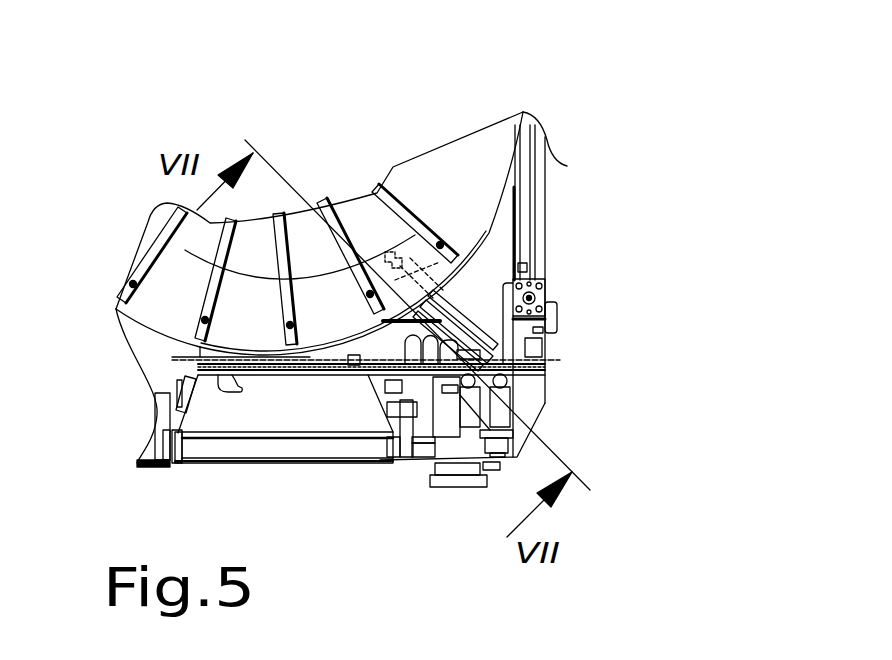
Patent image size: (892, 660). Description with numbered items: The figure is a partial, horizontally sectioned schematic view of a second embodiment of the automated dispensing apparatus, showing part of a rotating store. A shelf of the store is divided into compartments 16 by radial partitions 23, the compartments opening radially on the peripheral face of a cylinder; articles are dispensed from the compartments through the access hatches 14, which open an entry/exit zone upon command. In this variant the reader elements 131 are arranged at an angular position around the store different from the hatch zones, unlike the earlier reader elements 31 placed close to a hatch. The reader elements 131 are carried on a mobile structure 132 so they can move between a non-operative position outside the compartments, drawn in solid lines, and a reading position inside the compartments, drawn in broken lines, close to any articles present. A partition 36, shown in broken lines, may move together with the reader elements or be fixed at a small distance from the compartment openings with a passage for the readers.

The access hatch 14 is at (270, 375).
The compartment 16 is at (363, 217).
The radial partition 23 is at (193, 255).
The reader element 31 is at (195, 363).
The partition 36 is at (383, 292).
The reader element 131 is at (458, 268).
The mobile structure 132 is at (488, 276).